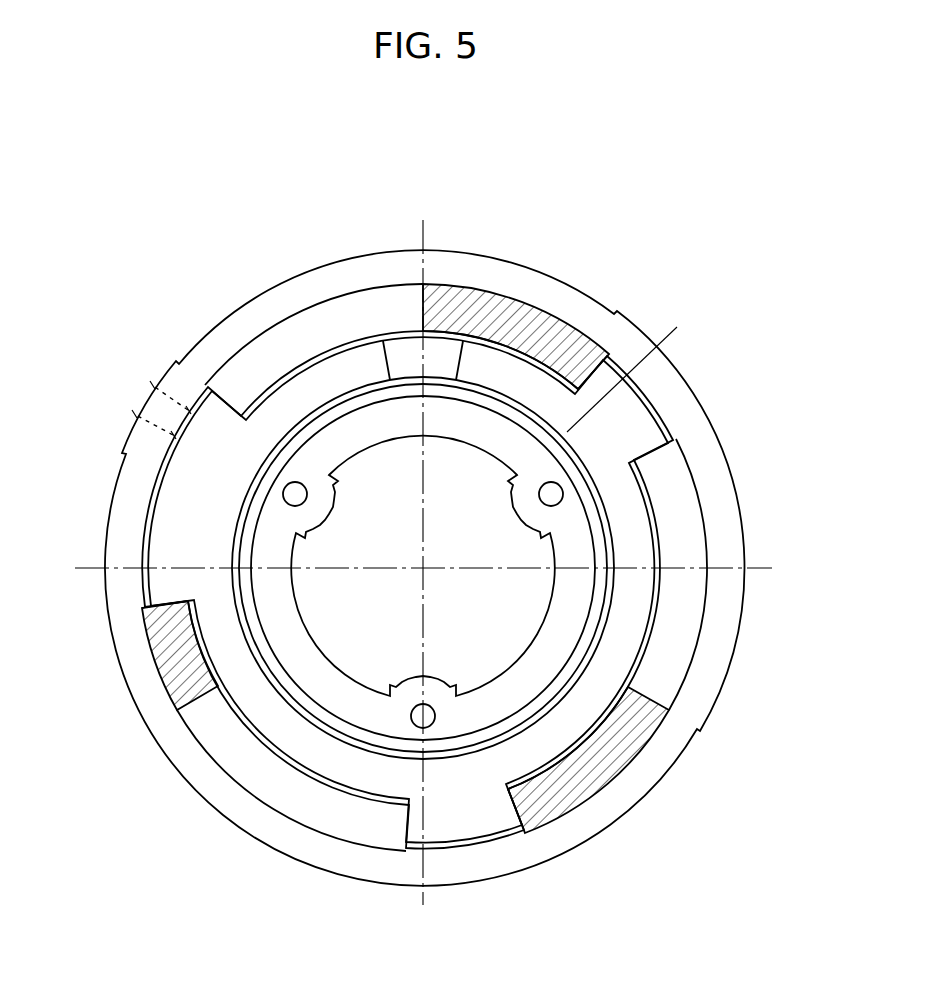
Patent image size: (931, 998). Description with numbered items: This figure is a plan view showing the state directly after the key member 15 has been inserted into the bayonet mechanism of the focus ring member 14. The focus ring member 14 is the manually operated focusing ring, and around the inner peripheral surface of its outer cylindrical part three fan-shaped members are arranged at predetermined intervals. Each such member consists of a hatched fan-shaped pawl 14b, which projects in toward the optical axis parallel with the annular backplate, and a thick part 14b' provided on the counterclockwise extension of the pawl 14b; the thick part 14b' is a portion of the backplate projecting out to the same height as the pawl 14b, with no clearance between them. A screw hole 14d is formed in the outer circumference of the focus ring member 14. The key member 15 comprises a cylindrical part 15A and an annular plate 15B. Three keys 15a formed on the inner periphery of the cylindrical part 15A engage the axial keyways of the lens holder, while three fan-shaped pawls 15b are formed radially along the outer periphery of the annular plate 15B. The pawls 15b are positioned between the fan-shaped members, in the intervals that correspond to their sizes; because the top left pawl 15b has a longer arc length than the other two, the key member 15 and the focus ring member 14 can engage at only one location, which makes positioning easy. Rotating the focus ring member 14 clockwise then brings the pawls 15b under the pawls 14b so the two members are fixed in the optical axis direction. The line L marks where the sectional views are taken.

The focus ring member 14 is at (501, 241).
The fan-shaped pawls 14b is at (374, 542).
The fan-shaped thick parts 14b' is at (464, 540).
The screw hole 14d is at (178, 392).
The key member 15 is at (660, 602).
The cylindrical part 15A is at (320, 675).
The annular plate 15B is at (383, 773).
The keys 15a is at (323, 508).
The fan-shaped pawls 15b is at (665, 420).
The section line L is at (626, 373).